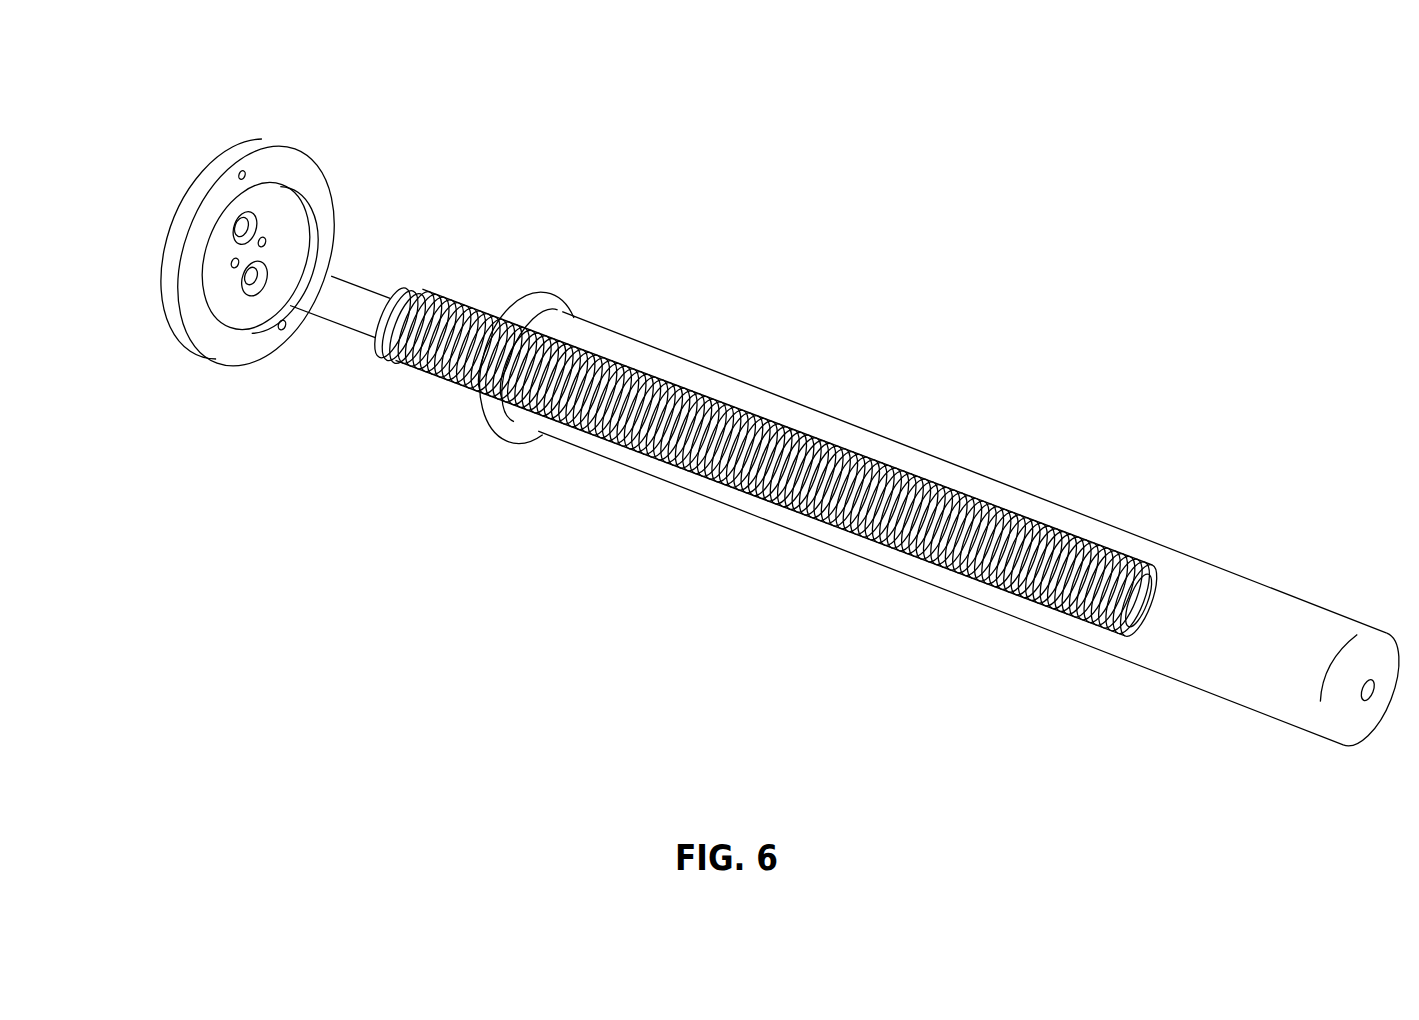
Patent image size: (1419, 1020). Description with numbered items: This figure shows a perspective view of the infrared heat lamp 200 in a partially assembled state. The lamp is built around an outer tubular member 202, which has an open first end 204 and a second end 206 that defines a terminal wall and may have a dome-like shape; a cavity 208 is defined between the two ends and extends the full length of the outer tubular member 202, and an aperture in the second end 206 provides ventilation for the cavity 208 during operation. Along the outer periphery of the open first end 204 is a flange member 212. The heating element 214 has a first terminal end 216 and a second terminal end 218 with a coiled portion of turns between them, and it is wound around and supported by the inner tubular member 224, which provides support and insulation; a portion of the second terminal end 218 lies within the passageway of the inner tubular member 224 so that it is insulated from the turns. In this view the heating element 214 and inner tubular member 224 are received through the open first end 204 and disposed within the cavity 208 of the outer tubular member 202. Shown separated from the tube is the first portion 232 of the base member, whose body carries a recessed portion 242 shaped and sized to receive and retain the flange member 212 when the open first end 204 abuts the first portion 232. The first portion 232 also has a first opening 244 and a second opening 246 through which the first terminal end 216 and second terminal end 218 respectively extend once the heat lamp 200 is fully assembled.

The infrared heat lamp 200 is at (1165, 222).
The outer tubular member 202 is at (1018, 648).
The open first end 204 is at (568, 310).
The second end 206 is at (1332, 743).
The cavity 208 is at (1238, 630).
The flange member 212 is at (490, 432).
The heating element 214 is at (986, 504).
The first terminal end 216 is at (322, 330).
The second terminal end 218 is at (354, 282).
The inner tubular member 224 is at (805, 437).
The first portion 232 is at (212, 143).
The recessed portion 242 is at (283, 213).
The first opening 244 is at (247, 276).
The second opening 246 is at (238, 223).